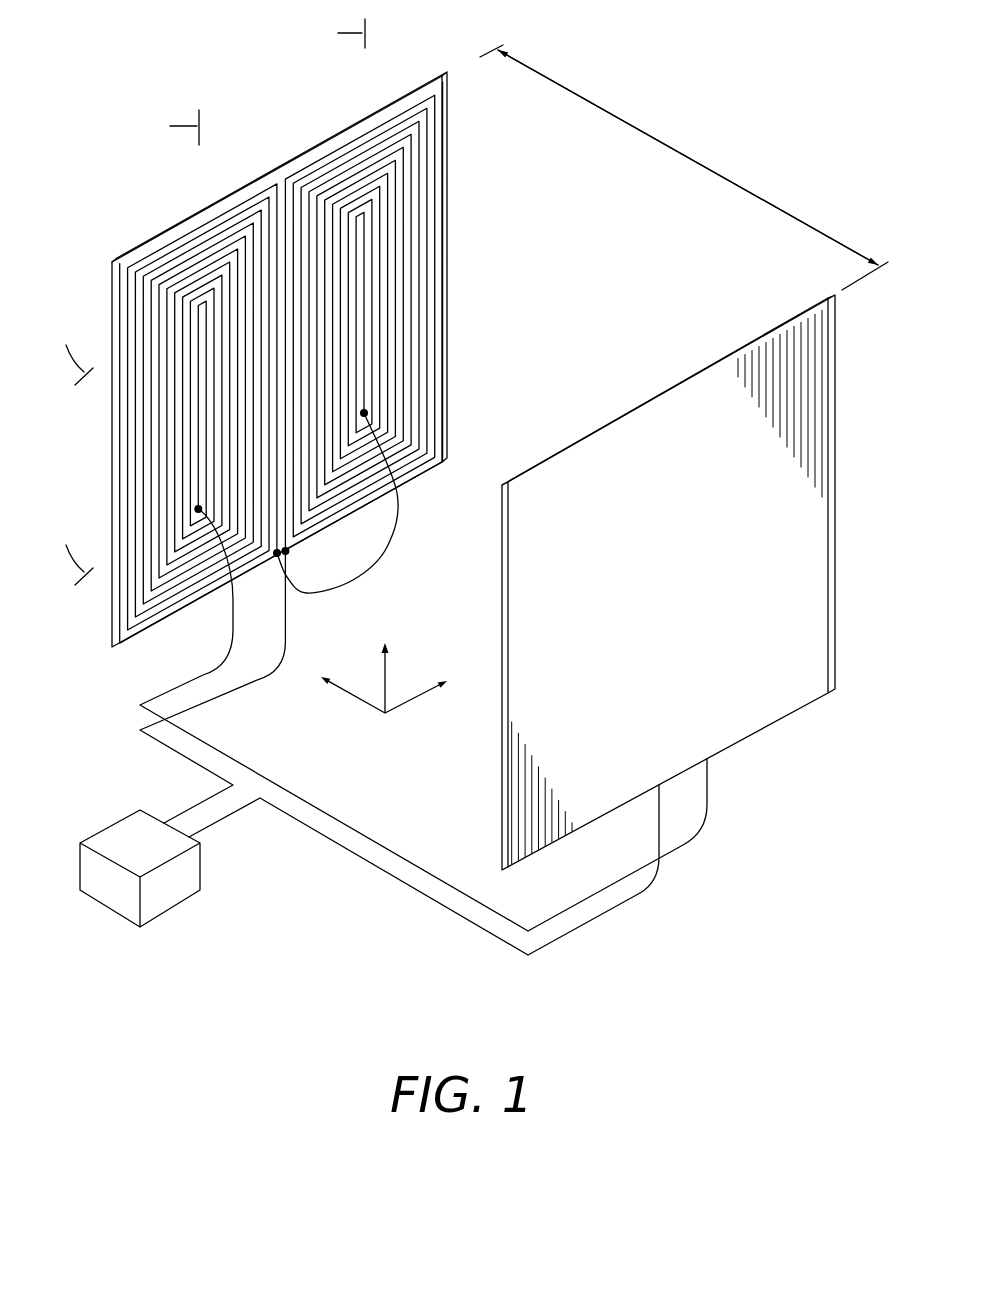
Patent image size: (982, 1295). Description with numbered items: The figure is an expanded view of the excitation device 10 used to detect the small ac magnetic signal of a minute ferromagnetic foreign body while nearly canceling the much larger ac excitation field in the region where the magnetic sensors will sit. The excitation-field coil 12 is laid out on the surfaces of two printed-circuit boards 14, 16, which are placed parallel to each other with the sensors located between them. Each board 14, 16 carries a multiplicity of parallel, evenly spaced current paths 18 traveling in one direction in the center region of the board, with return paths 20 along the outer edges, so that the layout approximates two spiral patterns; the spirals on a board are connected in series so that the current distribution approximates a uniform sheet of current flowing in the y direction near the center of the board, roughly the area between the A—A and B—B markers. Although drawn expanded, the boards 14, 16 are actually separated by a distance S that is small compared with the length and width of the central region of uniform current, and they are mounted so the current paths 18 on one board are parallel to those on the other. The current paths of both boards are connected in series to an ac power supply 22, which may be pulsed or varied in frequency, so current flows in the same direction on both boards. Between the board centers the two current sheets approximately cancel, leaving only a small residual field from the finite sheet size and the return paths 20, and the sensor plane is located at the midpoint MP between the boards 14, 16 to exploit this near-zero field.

The excitation device 10 is at (183, 66).
The excitation-field coil 12 is at (367, 135).
The printed-circuit board 14 is at (447, 360).
The printed-circuit board 16 is at (838, 568).
The current paths 18 is at (303, 212).
The return paths 20 is at (432, 228).
The ac power supply 22 is at (175, 908).
The midpoint MP is at (668, 147).
The distance S is at (763, 200).